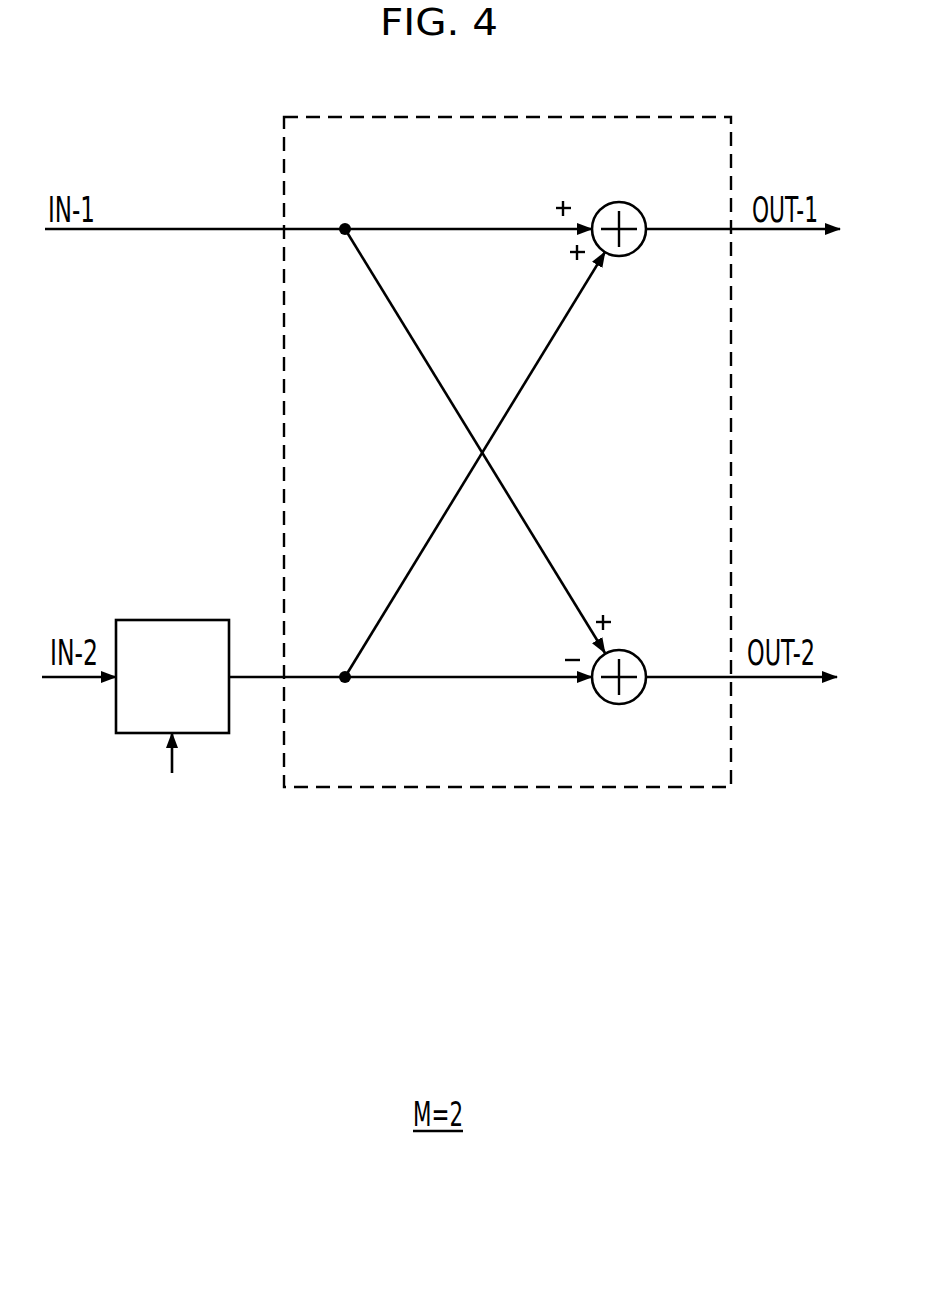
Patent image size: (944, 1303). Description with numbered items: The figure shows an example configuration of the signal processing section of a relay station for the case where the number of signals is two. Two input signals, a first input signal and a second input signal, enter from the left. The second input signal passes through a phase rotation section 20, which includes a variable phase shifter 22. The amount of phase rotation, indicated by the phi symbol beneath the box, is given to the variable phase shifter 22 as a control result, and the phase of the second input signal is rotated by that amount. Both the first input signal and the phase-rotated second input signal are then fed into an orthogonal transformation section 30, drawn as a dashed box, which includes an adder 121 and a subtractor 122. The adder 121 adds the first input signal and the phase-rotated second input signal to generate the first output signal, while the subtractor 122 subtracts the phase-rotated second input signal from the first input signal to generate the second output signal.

The phase rotation section 20 is at (230, 727).
The variable phase shifter 22 is at (170, 620).
The orthogonal transformation section 30 is at (507, 503).
The adder 121 is at (622, 203).
The subtractor 122 is at (622, 645).